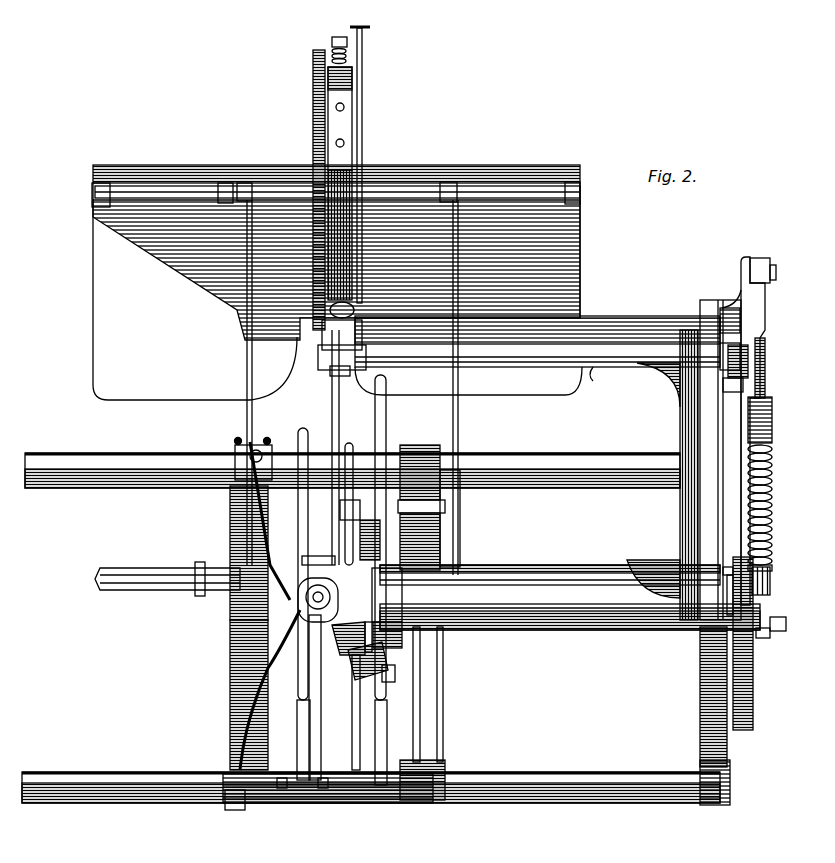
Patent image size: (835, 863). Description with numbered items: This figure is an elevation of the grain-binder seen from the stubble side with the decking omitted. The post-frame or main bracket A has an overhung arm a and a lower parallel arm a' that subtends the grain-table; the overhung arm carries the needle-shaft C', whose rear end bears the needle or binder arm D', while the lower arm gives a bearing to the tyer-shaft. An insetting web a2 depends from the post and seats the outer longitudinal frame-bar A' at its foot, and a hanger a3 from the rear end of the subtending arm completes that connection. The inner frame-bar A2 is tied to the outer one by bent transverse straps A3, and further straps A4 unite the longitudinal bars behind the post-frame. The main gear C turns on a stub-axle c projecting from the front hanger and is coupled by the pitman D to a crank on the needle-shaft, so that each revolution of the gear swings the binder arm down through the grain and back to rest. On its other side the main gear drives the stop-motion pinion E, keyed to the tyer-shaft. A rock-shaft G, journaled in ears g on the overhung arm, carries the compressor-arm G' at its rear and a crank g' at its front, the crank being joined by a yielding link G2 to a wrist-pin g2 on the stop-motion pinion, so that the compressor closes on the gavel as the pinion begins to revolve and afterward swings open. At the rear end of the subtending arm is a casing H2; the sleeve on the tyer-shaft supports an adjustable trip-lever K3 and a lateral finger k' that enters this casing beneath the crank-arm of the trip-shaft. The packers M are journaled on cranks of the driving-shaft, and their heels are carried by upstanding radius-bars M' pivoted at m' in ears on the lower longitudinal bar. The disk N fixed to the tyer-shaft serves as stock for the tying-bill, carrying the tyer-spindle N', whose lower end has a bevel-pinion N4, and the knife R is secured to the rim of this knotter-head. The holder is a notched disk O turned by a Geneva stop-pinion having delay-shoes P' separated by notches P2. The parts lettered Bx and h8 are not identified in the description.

The needle-shaft C' is at (434, 213).
The overhung arm a is at (537, 341).
The rock-shaft G is at (517, 385).
The ears g is at (535, 352).
The compressor-arm G' is at (321, 447).
The pitman D is at (743, 438).
The crank g' is at (722, 369).
The post-frame A is at (669, 475).
The second parallel frame-bar A2 is at (352, 468).
The transverse frame-bars A3 is at (440, 495).
The metal bars or straps A4 is at (231, 518).
The yielding link G2 is at (772, 515).
The shaft Bx is at (215, 592).
The lower parallel arm a' is at (570, 608).
The stop-motion pinion E is at (766, 596).
The stub-axle c is at (778, 621).
The wrist-pin g2 is at (768, 634).
The main gear C is at (748, 643).
The insetting web a2 is at (700, 712).
The outer longitudinal frame-bar A' is at (376, 770).
The hanger a3 is at (422, 713).
The pivots m' is at (327, 805).
The radius-bars M' is at (336, 742).
The packers M is at (352, 537).
The binder arm D' is at (353, 493).
The trip finger K3 is at (342, 508).
The lateral finger k' is at (373, 540).
The notches P2 is at (270, 521).
The notched disk O is at (300, 582).
The knife R is at (314, 565).
The casing H2 is at (387, 595).
The ratchet h8 is at (416, 424).
The delay-shoes P' is at (322, 697).
The tyer-spindle N' is at (341, 712).
The disk N is at (356, 662).
The bevel-pinion N4 is at (400, 666).